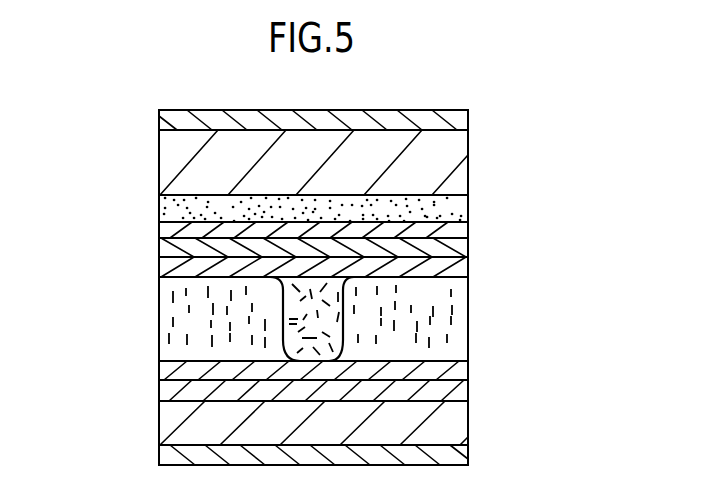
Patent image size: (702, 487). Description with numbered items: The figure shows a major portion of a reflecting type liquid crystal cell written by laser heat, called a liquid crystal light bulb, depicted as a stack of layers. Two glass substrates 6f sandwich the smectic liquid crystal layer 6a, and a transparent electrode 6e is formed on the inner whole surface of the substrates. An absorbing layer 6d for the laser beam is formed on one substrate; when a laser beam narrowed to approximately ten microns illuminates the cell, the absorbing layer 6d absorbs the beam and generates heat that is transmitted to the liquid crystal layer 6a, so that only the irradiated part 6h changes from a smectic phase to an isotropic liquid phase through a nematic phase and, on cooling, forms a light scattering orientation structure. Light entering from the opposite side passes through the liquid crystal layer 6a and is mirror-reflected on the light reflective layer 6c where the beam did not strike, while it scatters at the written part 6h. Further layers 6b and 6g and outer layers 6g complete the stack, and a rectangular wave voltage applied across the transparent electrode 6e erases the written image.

The liquid crystal layer 6a is at (468, 313).
The layer 6b is at (468, 262).
The light reflective layer 6c is at (468, 225).
The absorbing layer 6d is at (160, 213).
The transparent electrode 6e is at (468, 200).
The glass substrate 6f is at (160, 162).
The outer layer 6g is at (468, 119).
The irradiated part 6h is at (282, 313).